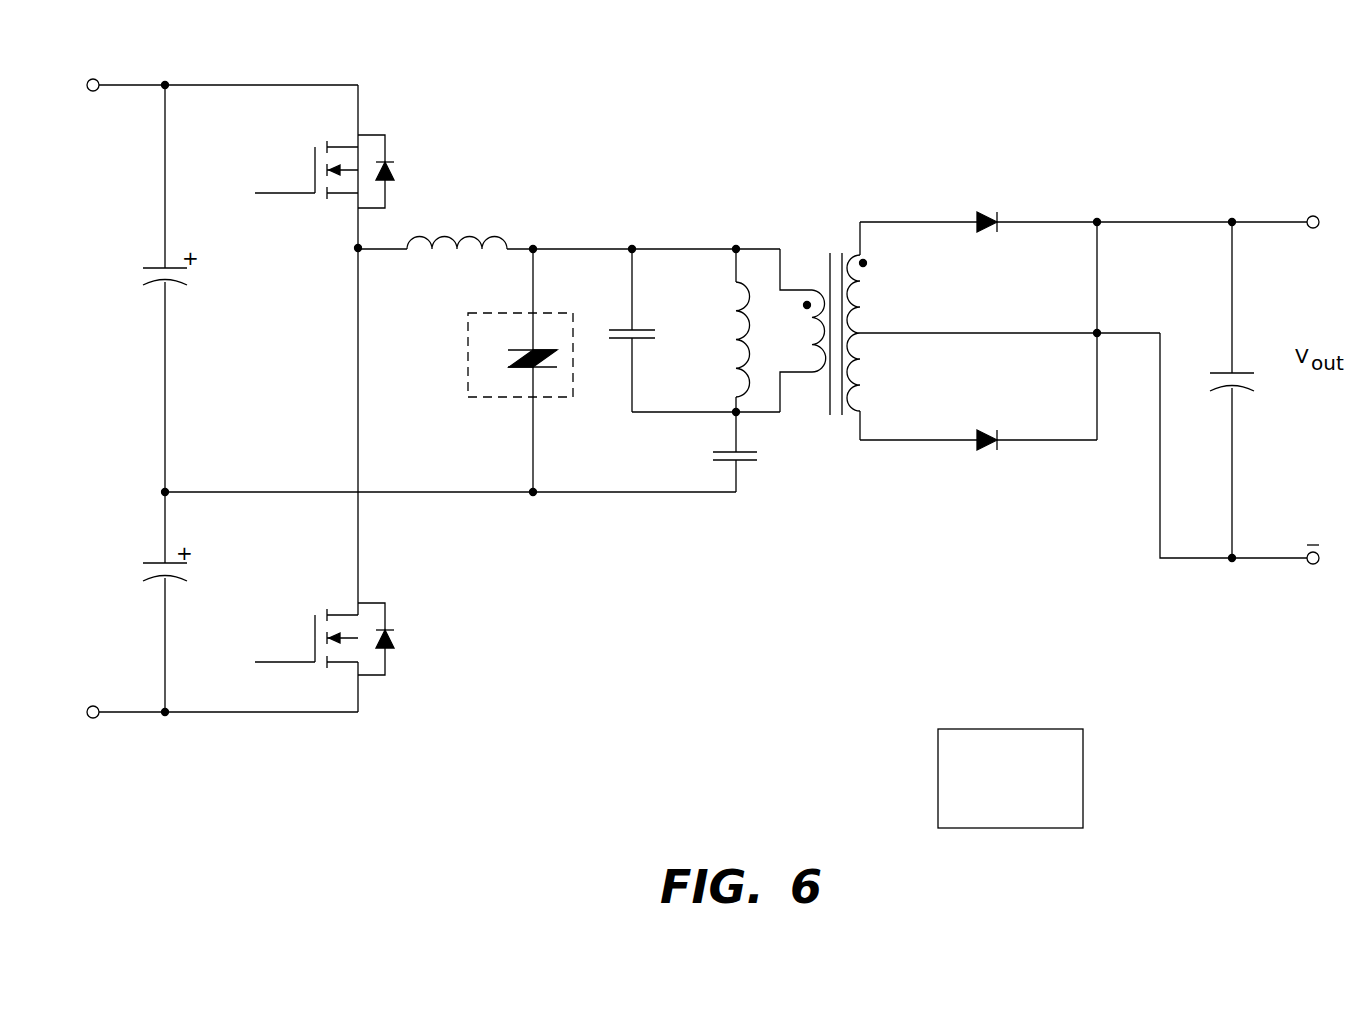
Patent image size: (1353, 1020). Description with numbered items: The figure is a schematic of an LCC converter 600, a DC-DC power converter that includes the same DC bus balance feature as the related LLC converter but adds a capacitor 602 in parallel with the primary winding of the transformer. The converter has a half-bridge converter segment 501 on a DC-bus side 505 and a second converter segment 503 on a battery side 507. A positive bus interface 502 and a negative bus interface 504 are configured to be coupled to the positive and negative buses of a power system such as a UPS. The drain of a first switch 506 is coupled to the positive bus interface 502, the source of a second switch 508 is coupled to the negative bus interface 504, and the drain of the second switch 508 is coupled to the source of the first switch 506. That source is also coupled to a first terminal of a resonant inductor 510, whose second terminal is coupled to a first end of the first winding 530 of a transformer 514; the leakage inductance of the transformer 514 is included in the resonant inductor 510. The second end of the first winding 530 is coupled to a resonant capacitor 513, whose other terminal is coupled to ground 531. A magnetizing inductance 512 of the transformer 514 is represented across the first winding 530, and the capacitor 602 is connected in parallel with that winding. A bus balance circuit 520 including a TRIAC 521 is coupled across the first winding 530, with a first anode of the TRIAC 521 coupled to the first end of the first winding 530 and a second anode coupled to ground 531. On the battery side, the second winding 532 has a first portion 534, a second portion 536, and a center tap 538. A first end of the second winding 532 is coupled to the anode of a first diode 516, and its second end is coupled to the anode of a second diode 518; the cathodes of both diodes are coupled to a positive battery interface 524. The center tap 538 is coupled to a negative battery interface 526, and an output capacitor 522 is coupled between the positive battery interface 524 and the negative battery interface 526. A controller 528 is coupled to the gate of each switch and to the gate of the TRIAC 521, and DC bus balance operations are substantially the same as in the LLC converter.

The LCC converter 600 is at (1195, 105).
The half-bridge converter segment 501 is at (497, 147).
The positive bus interface 502 is at (262, 85).
The second converter segment 503 is at (882, 153).
The negative bus interface 504 is at (268, 715).
The DC-bus side 505 is at (487, 583).
The first switch 506 is at (300, 194).
The battery side 507 is at (945, 535).
The second switch 508 is at (292, 666).
The resonant inductor 510 is at (493, 238).
The magnetizing inductance 512 is at (736, 302).
The resonant capacitor 513 is at (745, 462).
The transformer 514 is at (956, 327).
The first diode 516 is at (985, 215).
The second diode 518 is at (990, 447).
The bus balance circuit 520 is at (476, 370).
The TRIAC 521 is at (530, 349).
The output capacitor 522 is at (1215, 342).
The positive battery interface 524 is at (1312, 218).
The negative battery interface 526 is at (1310, 564).
The controller 528 is at (1015, 728).
The first winding 530 is at (813, 373).
The ground 531 is at (168, 490).
The second winding 532 is at (846, 252).
The first portion 534 is at (851, 295).
The second portion 536 is at (851, 395).
The center tap 538 is at (856, 333).
The capacitor 602 is at (628, 330).